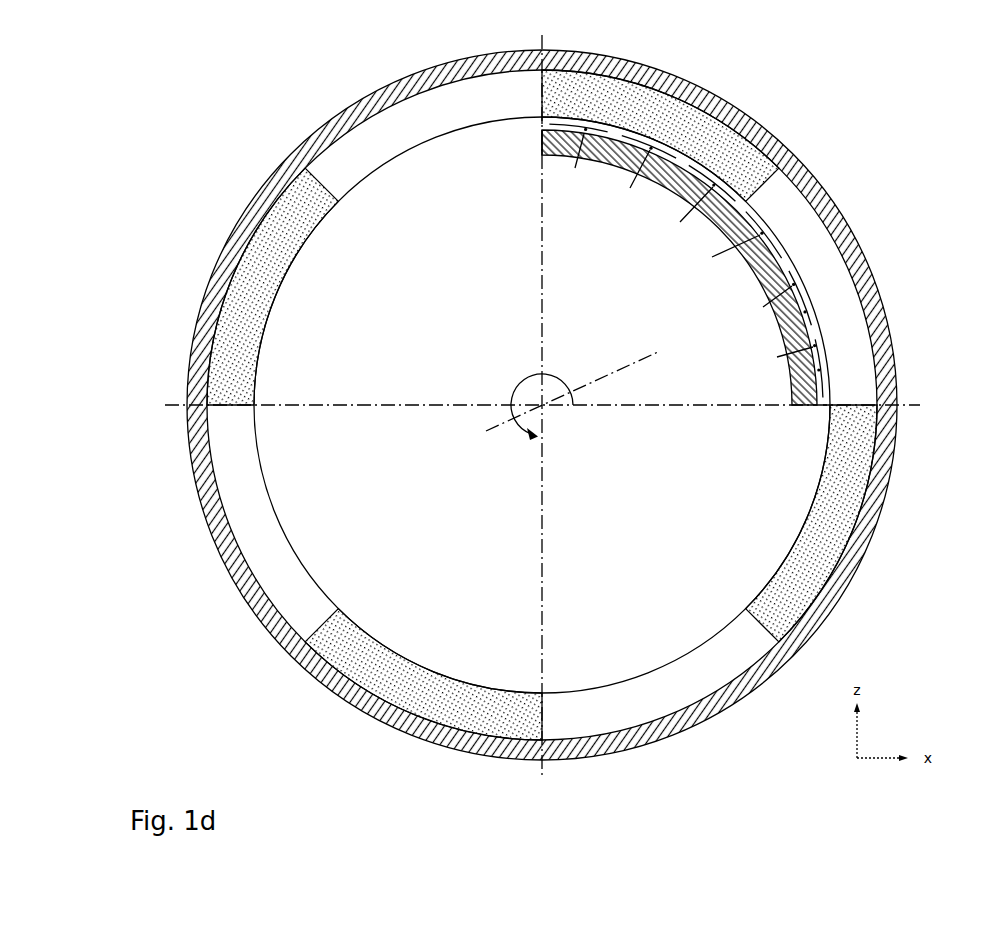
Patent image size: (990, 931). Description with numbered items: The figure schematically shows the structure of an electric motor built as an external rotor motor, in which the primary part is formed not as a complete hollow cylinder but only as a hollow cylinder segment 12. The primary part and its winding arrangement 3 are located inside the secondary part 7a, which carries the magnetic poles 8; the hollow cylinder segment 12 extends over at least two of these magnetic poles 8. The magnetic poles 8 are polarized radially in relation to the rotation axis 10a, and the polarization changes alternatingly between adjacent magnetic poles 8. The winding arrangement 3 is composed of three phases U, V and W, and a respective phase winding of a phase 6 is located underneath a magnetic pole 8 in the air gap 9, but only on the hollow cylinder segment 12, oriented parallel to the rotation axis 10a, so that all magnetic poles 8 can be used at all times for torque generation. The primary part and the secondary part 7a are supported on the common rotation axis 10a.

The secondary part 7a is at (362, 113).
The magnetic poles 8 is at (365, 645).
The winding arrangement 3 is at (733, 267).
The phase 6 is at (833, 363).
The hollow cylinder segment 12 is at (540, 148).
The air gap 9 is at (830, 407).
The rotation axis 10a is at (618, 367).